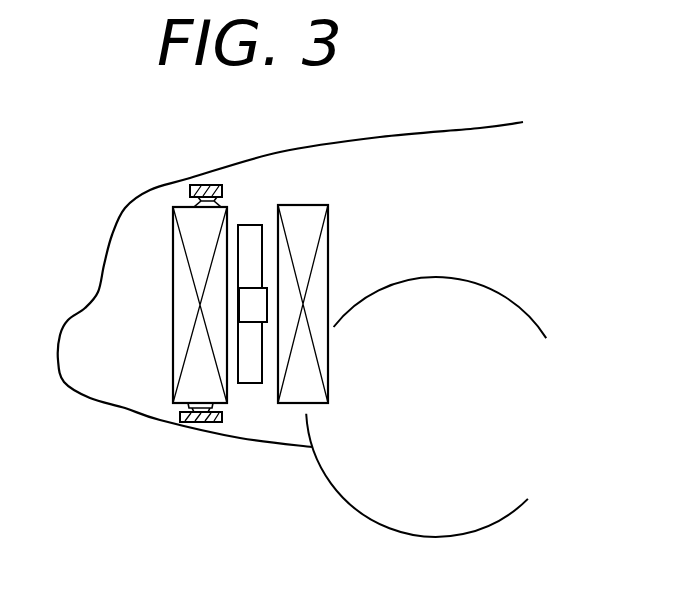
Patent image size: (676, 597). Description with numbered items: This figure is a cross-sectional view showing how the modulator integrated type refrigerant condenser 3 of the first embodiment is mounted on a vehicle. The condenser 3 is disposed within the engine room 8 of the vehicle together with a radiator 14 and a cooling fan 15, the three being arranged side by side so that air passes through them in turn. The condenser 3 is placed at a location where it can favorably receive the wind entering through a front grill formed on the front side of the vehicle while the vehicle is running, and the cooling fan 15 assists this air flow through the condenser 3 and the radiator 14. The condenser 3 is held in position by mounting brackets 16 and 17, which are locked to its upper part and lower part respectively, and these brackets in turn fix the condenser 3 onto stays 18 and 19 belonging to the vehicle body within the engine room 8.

The modulator integrated type refrigerant condenser 3 is at (183, 290).
The engine room 8 is at (408, 240).
The radiator 14 is at (292, 395).
The cooling fan 15 is at (250, 385).
The mounting bracket 16 is at (192, 205).
The mounting bracket 17 is at (173, 408).
The stay 18 is at (211, 185).
The stay 19 is at (203, 422).